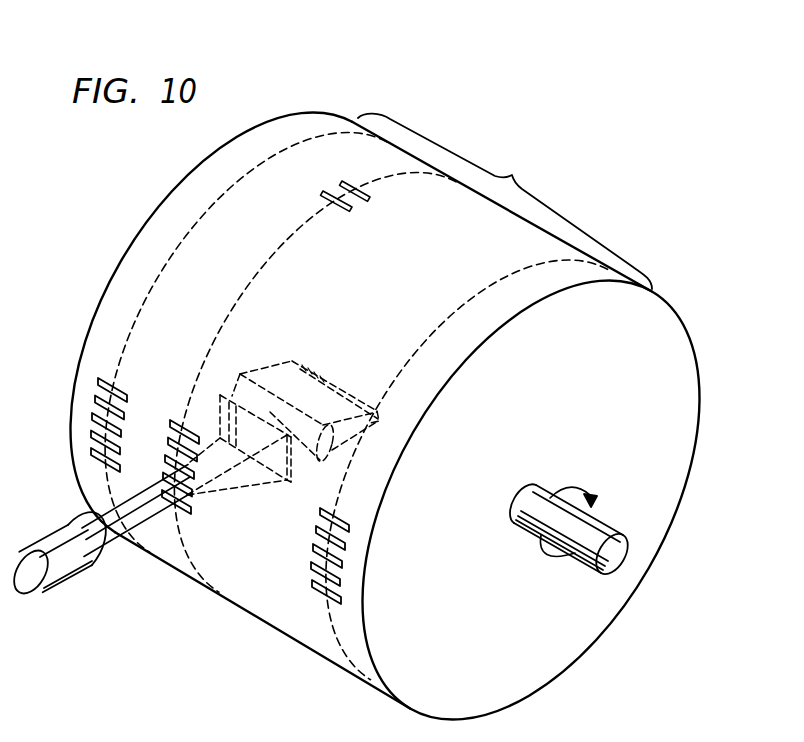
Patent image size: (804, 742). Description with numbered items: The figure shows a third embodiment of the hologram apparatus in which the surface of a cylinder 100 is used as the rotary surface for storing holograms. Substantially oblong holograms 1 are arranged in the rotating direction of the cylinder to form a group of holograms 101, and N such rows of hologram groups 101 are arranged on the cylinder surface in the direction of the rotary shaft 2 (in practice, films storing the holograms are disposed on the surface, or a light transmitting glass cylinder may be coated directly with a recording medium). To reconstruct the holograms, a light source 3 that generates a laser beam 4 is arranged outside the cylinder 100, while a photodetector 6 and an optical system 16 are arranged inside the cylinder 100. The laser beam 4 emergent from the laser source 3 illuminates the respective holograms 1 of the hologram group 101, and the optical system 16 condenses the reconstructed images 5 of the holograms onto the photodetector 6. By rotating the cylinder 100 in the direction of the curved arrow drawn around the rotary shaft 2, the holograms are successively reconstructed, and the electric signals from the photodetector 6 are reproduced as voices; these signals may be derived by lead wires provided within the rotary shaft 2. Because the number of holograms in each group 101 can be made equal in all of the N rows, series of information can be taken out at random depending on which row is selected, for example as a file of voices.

The hologram 1 is at (133, 373).
The group of holograms 101 is at (371, 199).
The cylinder 100 is at (260, 615).
The light source 3 is at (62, 582).
The laser beam 4 is at (106, 548).
The optical system 16 is at (256, 392).
The photodetector 6 is at (338, 388).
The reconstructed images 5 is at (221, 439).
The rotary shaft 2 is at (648, 485).